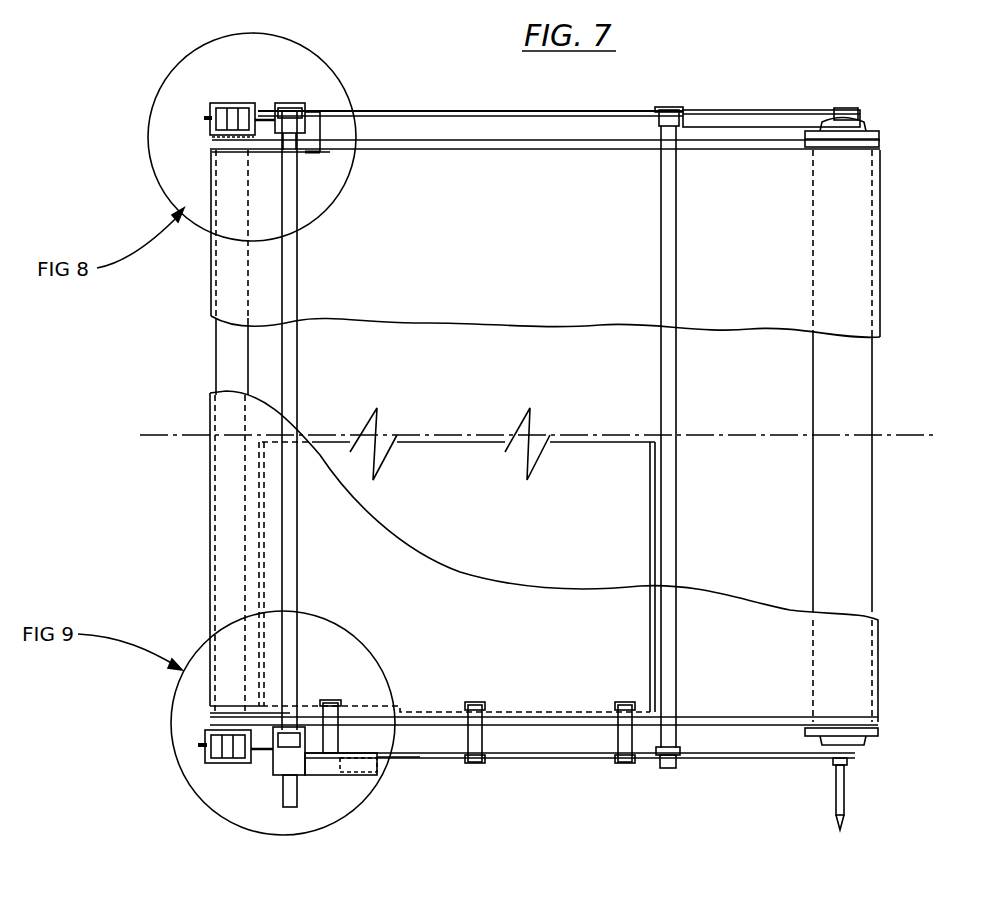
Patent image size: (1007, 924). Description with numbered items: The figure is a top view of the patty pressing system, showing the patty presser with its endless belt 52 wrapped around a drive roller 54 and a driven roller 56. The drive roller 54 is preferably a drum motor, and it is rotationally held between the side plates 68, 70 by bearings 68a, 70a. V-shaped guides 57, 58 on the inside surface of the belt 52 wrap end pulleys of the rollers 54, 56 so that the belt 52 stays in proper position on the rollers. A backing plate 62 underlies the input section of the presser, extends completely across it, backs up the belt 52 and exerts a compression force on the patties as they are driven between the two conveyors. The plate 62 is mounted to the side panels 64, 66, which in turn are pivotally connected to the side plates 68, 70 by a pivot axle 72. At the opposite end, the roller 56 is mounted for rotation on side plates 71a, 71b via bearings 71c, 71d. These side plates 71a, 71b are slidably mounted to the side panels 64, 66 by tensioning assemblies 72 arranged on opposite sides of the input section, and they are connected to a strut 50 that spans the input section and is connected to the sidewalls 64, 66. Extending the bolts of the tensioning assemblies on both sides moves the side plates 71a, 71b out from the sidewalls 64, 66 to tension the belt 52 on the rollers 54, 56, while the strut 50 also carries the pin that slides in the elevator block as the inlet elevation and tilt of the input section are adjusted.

The strut 50 is at (299, 350).
The endless belt 52 is at (210, 478).
The drive roller 54 is at (874, 530).
The driven roller 56 is at (212, 355).
The V-shaped guide 57 is at (713, 151).
The V-shaped guide 58 is at (766, 760).
The backing plate 62 is at (474, 452).
The side panel 64 is at (428, 762).
The side panel 66 is at (436, 109).
The side plate 68 is at (704, 760).
The bearing 68a is at (872, 738).
The side plate 70 is at (730, 109).
The bearing 70a is at (872, 132).
The side plate 71a is at (265, 775).
The side plate 71b is at (280, 103).
The bearing 71c is at (213, 763).
The bearing 71d is at (212, 105).
The pivot axle 72 is at (677, 398).